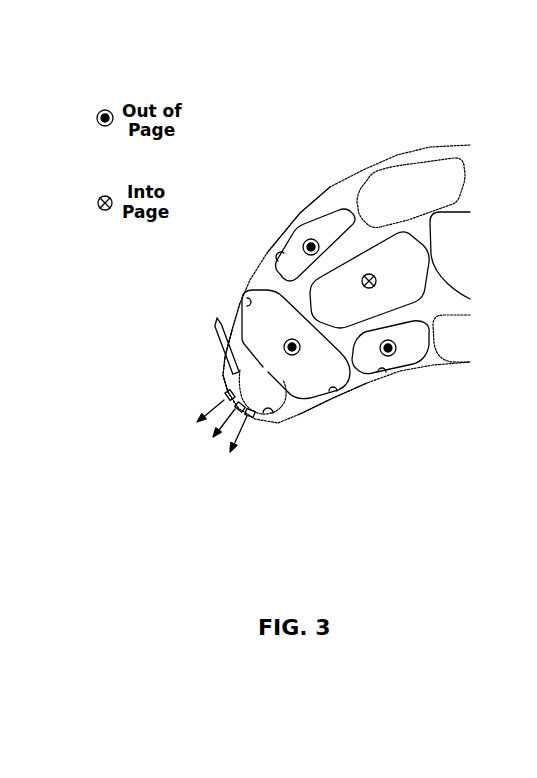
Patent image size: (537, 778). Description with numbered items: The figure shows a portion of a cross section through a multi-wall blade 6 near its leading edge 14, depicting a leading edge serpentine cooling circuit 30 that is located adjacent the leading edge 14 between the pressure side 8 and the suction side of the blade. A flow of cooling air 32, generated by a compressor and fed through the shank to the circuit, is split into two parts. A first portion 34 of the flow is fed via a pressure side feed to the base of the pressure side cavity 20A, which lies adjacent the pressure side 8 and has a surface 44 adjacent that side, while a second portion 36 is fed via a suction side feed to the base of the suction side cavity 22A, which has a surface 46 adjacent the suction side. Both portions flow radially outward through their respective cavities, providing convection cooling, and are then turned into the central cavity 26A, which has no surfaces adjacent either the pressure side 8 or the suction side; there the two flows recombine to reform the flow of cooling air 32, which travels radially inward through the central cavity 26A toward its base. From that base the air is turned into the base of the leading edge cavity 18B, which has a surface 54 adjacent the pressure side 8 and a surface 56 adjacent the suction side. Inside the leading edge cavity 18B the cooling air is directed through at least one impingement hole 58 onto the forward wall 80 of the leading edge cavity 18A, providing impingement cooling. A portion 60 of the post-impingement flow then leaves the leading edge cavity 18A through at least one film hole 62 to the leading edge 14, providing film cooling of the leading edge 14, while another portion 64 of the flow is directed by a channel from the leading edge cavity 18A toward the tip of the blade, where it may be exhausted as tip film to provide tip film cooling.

The multi-wall blade 6 is at (345, 135).
The pressure side 8 is at (310, 470).
The leading edge 14 is at (187, 453).
The leading edge cavity 18A is at (233, 382).
The leading edge cavity 18B is at (240, 322).
The pressure side cavity 20A is at (407, 370).
The suction side cavity 22A is at (297, 231).
The central cavity 26A is at (416, 272).
The leading edge serpentine cooling circuit 30 is at (262, 118).
The flow of cooling air 32 is at (295, 357).
The first portion of the flow of cooling air 34 is at (397, 351).
The second portion of the flow of cooling air 36 is at (312, 239).
The surface 44 is at (380, 372).
The surface 46 is at (277, 260).
The surface 54 is at (338, 390).
The surface 56 is at (249, 302).
The impingement hole 58 is at (270, 366).
The portion of the post-impingement flow of cooling air 60 is at (223, 400).
The film hole 62 is at (265, 420).
The portion of the flow of cooling air 64 is at (214, 333).
The forward wall 80 is at (270, 416).